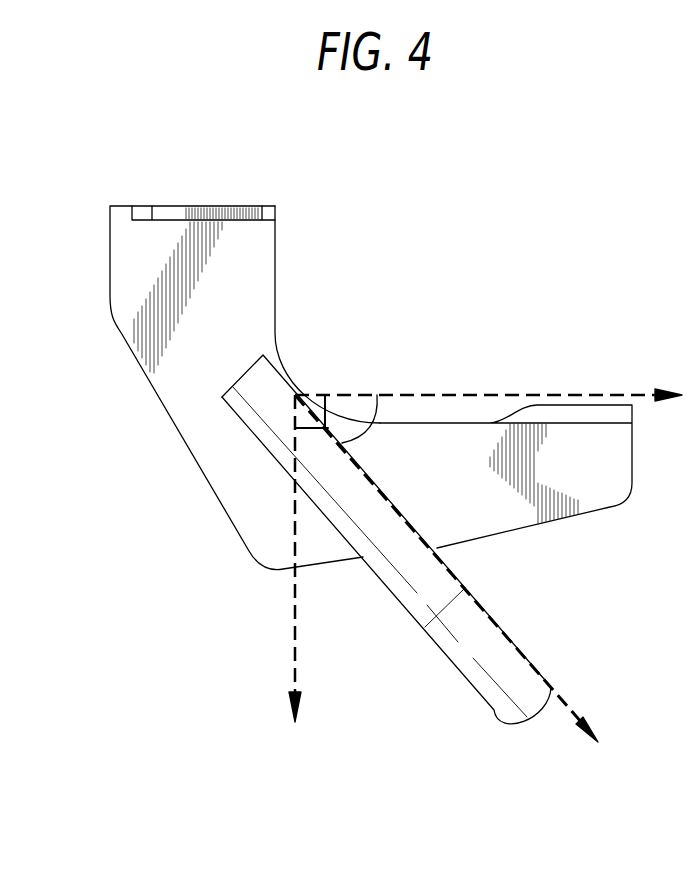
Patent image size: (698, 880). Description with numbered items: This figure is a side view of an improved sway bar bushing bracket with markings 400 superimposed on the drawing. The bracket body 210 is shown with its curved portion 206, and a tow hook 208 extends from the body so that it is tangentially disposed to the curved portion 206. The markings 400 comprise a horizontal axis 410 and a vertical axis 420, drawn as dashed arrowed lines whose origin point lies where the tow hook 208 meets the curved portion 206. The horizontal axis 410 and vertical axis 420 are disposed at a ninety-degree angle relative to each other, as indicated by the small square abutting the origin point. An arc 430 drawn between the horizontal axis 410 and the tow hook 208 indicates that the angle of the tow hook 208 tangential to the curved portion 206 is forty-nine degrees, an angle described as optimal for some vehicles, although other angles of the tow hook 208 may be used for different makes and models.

The mounting body 210 is at (150, 278).
The curved portion 206 is at (293, 388).
The tow hook 208 is at (421, 578).
The markings 400 is at (475, 280).
The horizontal axis 410 is at (535, 395).
The vertical axis 420 is at (295, 598).
The arc 430 is at (367, 429).